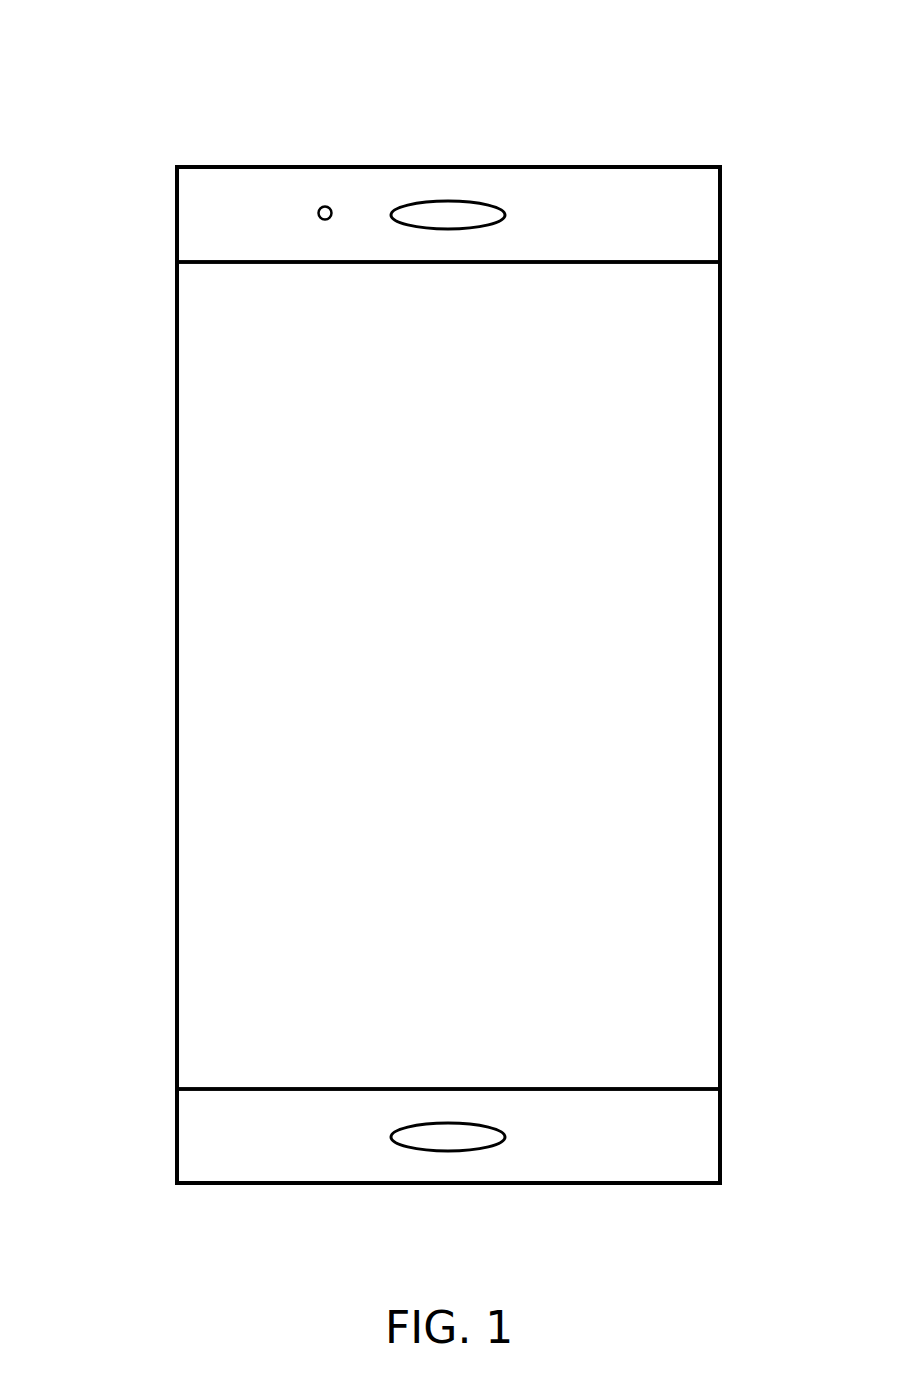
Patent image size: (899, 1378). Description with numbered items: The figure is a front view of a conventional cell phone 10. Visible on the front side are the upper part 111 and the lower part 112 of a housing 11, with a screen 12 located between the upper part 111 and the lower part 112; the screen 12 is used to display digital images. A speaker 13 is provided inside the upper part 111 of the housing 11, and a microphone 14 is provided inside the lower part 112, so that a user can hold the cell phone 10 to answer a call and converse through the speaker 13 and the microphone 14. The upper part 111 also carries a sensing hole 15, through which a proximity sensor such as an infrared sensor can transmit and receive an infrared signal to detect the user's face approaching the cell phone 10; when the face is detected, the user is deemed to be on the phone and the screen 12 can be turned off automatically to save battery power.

The cell phone 10 is at (135, 76).
The housing 11 is at (570, 167).
The upper part 111 is at (680, 213).
The screen 12 is at (645, 682).
The lower part 112 is at (680, 1138).
The speaker 13 is at (450, 215).
The microphone 14 is at (450, 1137).
The sensing hole 15 is at (324, 207).